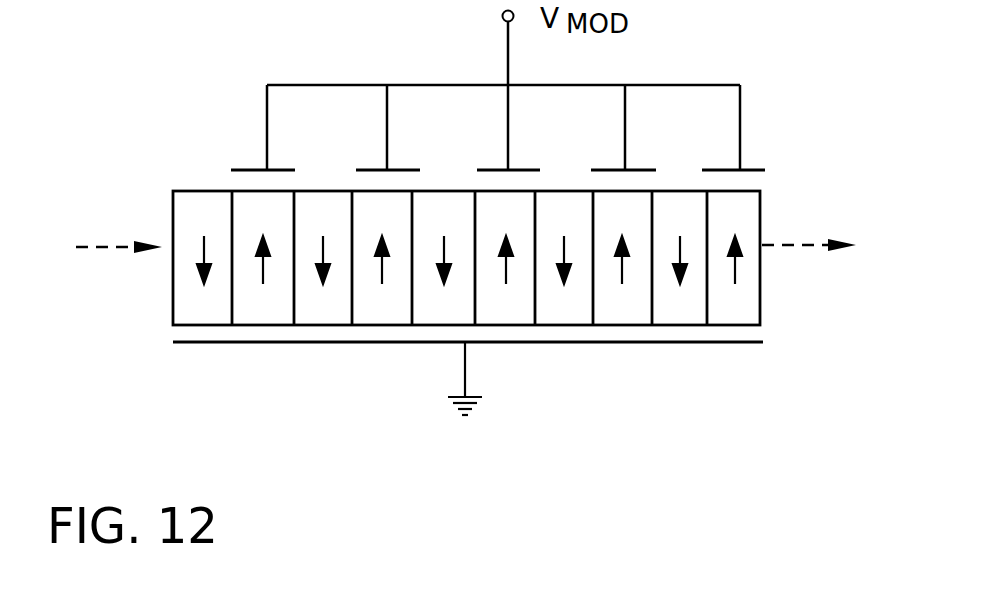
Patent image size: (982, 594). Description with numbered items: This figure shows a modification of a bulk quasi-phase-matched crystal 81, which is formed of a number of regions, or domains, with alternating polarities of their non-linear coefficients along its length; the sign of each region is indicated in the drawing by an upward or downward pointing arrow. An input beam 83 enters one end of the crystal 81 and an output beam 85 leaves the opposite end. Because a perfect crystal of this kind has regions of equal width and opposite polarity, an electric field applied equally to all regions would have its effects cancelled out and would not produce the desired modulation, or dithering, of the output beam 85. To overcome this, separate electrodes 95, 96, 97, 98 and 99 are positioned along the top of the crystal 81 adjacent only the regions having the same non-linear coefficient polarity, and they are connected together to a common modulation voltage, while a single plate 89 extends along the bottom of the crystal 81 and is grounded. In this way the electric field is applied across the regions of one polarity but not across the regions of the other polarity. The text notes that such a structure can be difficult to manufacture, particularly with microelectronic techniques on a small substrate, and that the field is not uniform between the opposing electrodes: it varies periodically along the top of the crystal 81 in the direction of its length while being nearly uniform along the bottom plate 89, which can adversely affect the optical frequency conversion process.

The QPM crystal 81 is at (173, 281).
The input beam 83 is at (95, 243).
The output beam 85 is at (807, 240).
The plate 89 is at (662, 343).
The electrode 95 is at (251, 170).
The electrode 96 is at (370, 170).
The electrode 97 is at (495, 170).
The electrode 98 is at (608, 170).
The electrode 99 is at (727, 170).